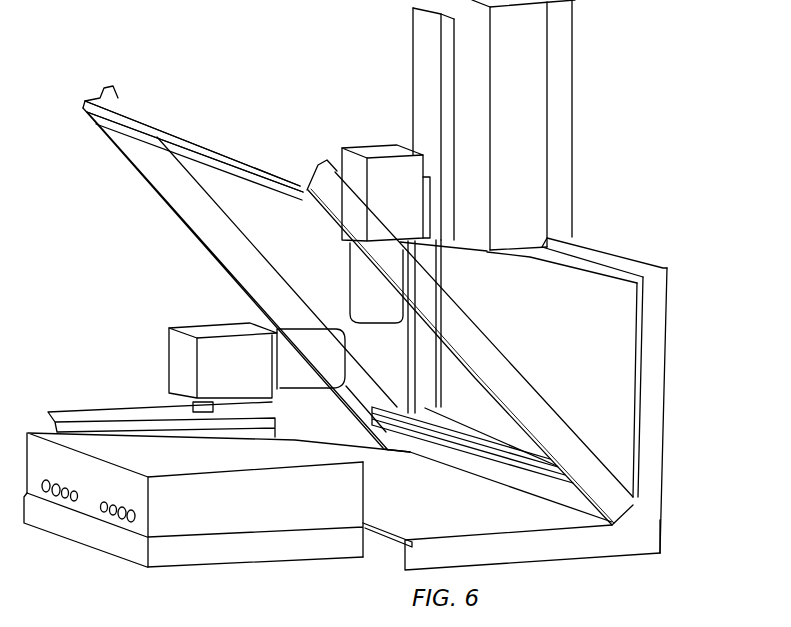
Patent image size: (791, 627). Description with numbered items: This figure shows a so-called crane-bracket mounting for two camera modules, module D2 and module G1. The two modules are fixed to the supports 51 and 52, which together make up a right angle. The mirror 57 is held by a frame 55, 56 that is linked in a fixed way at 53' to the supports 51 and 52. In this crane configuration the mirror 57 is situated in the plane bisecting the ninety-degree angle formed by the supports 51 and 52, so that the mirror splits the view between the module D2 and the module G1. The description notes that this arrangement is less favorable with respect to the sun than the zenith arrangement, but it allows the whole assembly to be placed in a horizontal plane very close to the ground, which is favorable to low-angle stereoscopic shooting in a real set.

The module G1 is at (530, 150).
The support 51 is at (655, 405).
The support 52 is at (545, 543).
The fixed link 53' is at (682, 549).
The frame 55 is at (487, 358).
The frame 56 is at (247, 152).
The mirror 57 is at (222, 195).
The module D2 is at (137, 447).